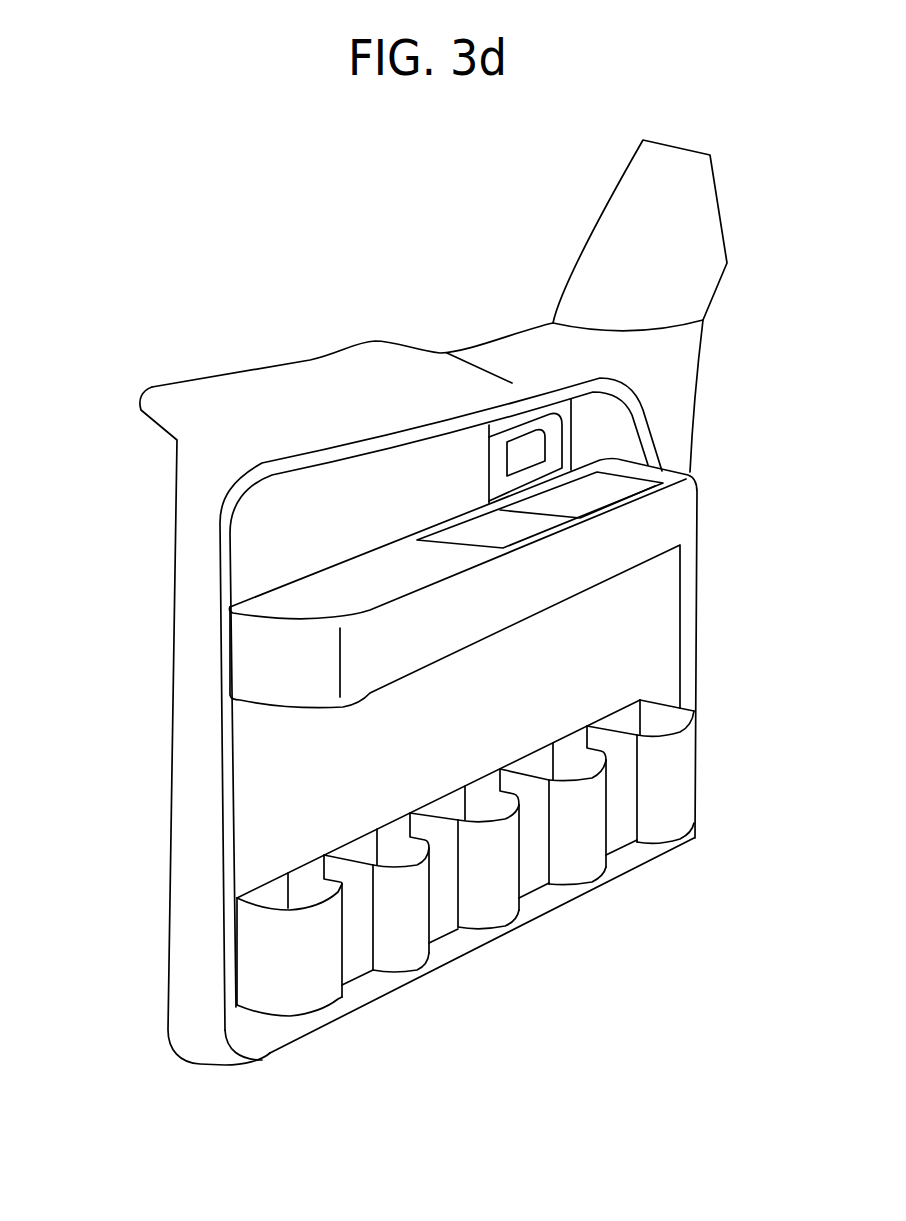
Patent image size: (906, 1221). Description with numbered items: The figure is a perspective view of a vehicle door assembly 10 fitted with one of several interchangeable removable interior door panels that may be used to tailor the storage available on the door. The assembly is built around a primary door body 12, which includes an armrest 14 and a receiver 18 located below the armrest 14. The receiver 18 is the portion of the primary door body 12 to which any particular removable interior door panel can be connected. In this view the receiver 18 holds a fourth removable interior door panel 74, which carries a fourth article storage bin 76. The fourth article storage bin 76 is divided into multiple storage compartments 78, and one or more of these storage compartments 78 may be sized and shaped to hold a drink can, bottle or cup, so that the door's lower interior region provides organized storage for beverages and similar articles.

The vehicle door assembly 10 is at (149, 316).
The primary door body 12 is at (190, 573).
The armrest 14 is at (330, 593).
The receiver 18 is at (256, 880).
The fourth removable interior door panel 74 is at (237, 952).
The fourth article storage bin 76 is at (586, 855).
The storage compartments 78 is at (300, 903).